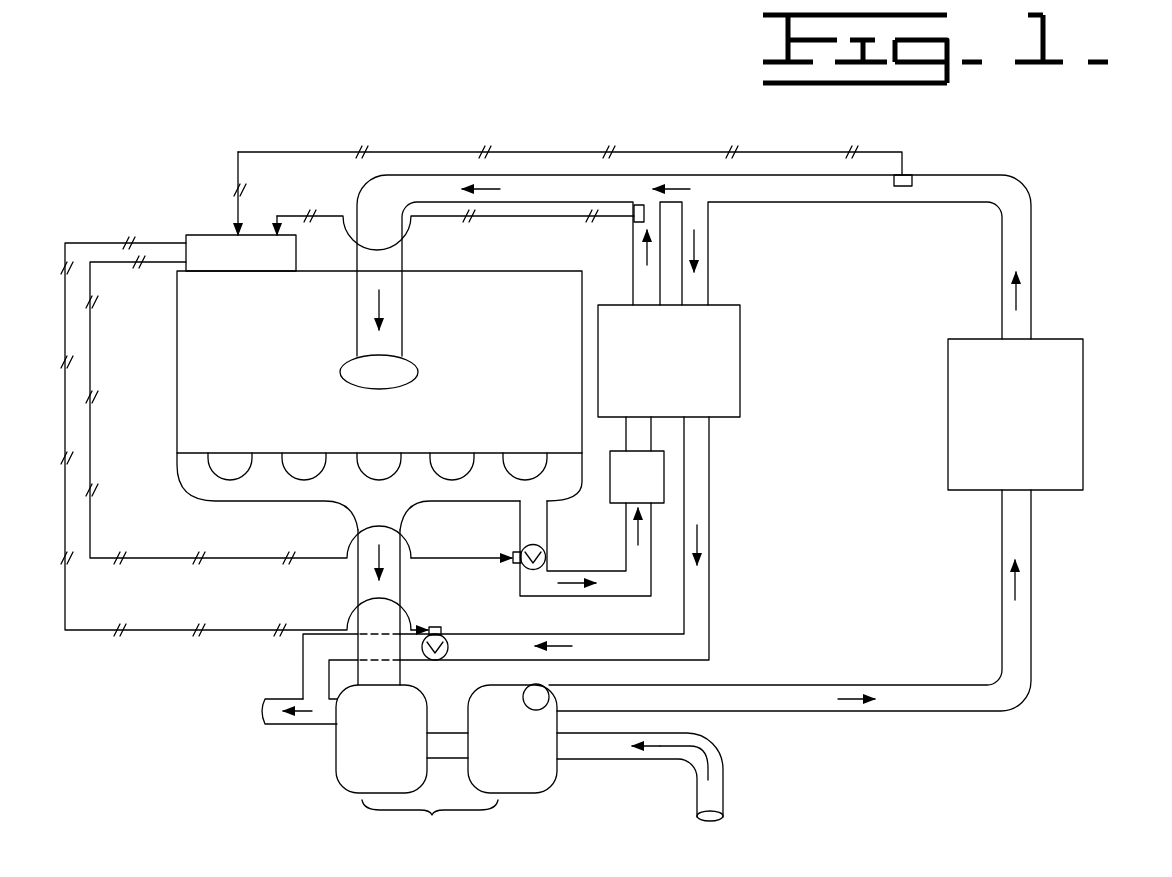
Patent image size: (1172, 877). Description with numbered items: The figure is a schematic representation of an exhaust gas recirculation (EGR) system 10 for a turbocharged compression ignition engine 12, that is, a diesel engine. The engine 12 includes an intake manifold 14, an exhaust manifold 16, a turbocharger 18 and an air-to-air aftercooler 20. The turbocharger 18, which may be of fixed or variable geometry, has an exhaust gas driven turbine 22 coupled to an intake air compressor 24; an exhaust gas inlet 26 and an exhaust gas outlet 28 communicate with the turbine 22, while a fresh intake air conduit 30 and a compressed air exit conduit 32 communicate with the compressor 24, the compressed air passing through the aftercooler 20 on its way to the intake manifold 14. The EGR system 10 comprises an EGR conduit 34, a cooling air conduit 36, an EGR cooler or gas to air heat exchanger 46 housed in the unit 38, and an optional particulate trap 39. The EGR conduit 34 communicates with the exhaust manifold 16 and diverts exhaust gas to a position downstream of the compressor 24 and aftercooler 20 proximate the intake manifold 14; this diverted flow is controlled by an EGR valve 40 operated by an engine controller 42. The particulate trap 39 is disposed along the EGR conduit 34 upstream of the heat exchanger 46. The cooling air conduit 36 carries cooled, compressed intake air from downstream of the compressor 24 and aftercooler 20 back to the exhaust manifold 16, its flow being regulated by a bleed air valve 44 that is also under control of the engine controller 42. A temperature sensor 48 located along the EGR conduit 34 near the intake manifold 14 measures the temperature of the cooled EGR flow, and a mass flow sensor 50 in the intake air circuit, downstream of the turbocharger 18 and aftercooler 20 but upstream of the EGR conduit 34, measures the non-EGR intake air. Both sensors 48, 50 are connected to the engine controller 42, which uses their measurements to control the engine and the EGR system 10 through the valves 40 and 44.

The exhaust gas recirculation (EGR) system 10 is at (113, 158).
The turbocharged compression ignition engine 12 is at (222, 390).
The intake manifold 14 is at (398, 376).
The exhaust manifold 16 is at (372, 510).
The turbocharger 18 is at (423, 818).
The air-to-air aftercooler 20 is at (1083, 445).
The exhaust gas driven turbine 22 is at (358, 782).
The intake air compressor 24 is at (515, 770).
The exhaust gas inlet 26 is at (400, 672).
The exhaust gas outlet 28 is at (276, 693).
The fresh intake air conduit 30 is at (722, 745).
The compressed air exit conduit 32 is at (812, 712).
The EGR conduit 34 is at (566, 570).
The cooling air conduit 36 is at (709, 620).
The reactor housing 38 is at (740, 357).
The particulate trap 39 is at (610, 478).
The EGR valve 40 is at (525, 546).
The engine controller 42 is at (186, 268).
The bleed air valve 44 is at (450, 640).
The EGR cooler 46 is at (671, 378).
The temperature sensor 48 is at (634, 222).
The mass flow sensor 50 is at (912, 172).